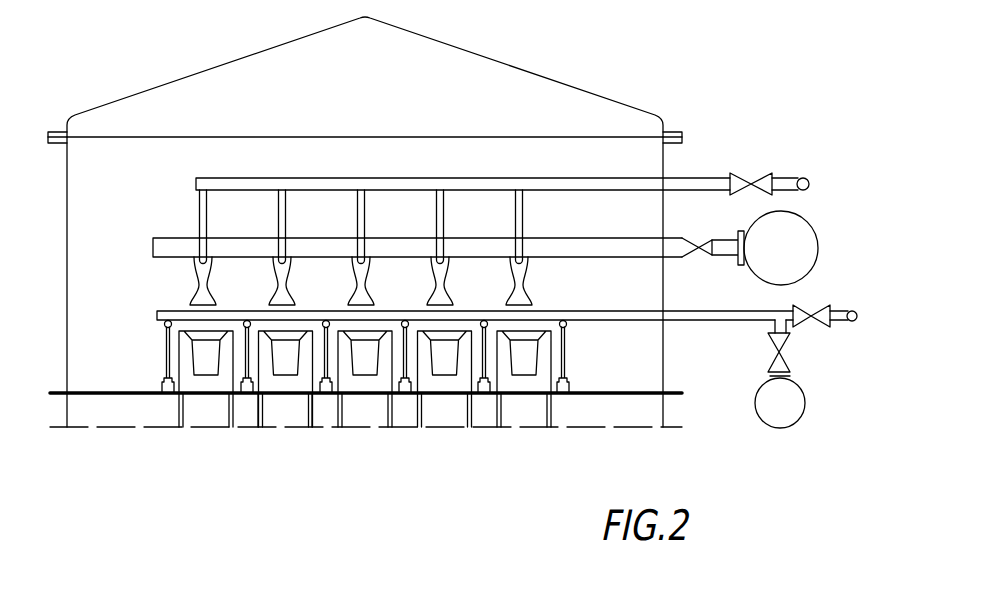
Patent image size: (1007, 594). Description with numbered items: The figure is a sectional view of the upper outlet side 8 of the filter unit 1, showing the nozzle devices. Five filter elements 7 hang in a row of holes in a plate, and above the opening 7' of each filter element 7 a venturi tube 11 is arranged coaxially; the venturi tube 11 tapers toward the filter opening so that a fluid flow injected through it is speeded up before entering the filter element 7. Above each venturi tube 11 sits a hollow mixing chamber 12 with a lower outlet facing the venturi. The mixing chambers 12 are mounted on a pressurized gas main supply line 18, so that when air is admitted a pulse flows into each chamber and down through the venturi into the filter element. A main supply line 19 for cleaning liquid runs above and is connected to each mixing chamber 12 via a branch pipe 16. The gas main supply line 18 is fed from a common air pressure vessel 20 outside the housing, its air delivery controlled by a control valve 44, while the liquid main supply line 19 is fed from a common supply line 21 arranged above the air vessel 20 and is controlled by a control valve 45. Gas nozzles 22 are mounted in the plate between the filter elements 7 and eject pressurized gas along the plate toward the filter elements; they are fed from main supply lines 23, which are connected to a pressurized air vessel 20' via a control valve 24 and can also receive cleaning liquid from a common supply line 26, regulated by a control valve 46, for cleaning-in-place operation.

The filter unit 1 is at (552, 30).
The filter element 7 is at (366, 437).
The opening of filter element 7' is at (285, 434).
The upper outlet side 8 is at (30, 262).
The venturi tube 11 is at (523, 350).
The mixing chamber 12 is at (200, 292).
The branch pipe 16 is at (198, 212).
The gas main supply line 18 is at (376, 246).
The cleaning liquid main supply line 19 is at (308, 186).
The air pressure vessel 20 is at (806, 248).
The pressurized air vessel 20' is at (813, 408).
The common supply line 21 is at (806, 180).
The gas nozzle 22 is at (568, 390).
The main supply line 23 is at (597, 313).
The control valve 24 is at (770, 350).
The common supply line 26 is at (854, 323).
The control valve 44 is at (688, 250).
The control valve 45 is at (736, 176).
The control valve 46 is at (823, 310).